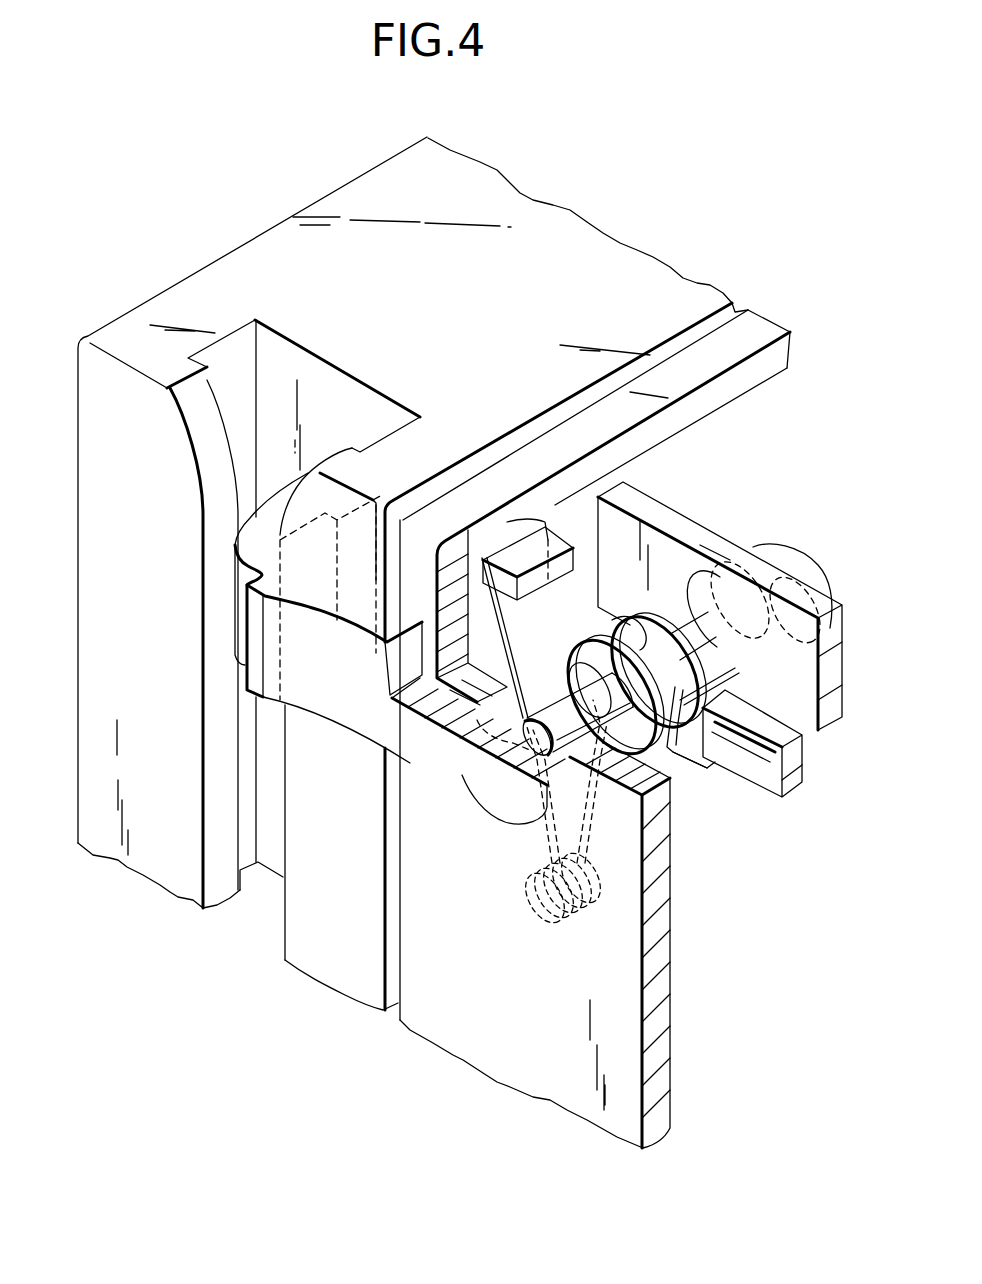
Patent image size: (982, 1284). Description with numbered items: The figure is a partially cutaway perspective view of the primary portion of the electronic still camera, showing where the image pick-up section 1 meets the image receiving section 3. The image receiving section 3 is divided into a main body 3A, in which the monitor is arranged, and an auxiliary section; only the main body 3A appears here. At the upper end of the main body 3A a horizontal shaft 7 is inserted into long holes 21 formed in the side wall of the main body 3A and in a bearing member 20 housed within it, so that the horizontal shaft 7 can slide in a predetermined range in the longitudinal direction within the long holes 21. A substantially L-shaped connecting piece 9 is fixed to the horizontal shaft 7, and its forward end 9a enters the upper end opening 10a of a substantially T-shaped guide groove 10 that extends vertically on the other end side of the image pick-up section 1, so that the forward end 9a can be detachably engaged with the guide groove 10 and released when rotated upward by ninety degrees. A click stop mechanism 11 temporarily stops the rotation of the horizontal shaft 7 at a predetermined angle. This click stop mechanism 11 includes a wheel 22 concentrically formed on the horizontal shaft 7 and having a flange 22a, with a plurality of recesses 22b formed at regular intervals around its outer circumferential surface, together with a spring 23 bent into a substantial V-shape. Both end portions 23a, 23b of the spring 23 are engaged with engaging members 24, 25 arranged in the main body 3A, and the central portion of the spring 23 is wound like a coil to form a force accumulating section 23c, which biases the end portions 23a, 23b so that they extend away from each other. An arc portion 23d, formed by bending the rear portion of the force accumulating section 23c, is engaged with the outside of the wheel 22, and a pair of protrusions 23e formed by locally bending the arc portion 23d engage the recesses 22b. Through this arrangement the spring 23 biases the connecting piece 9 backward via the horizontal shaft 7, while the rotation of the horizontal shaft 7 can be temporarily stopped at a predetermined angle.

The image pick-up section 1 is at (610, 250).
The image receiving section 3 is at (638, 461).
The main body of the image receiving section 3A is at (760, 328).
The horizontal shaft 7 is at (557, 713).
The connecting piece 9 is at (355, 717).
The forward end of the connecting piece 9a is at (368, 476).
The guide groove 10 is at (258, 883).
The upper end opening of the guide groove 10a is at (320, 377).
The click stop mechanism 11 is at (705, 795).
The bearing member 20 is at (663, 510).
The long holes 21 is at (497, 707).
The wheel 22 is at (619, 709).
The flange 22a is at (633, 614).
The recesses 22b is at (587, 640).
The spring 23 is at (553, 923).
The end portion of the spring 23a is at (518, 533).
The end portion of the spring 23b is at (722, 768).
The force accumulating section 23c is at (537, 910).
The arc portion 23d is at (658, 637).
The protrusions 23e is at (715, 668).
The engaging member 24 is at (575, 567).
The engaging member 25 is at (800, 760).